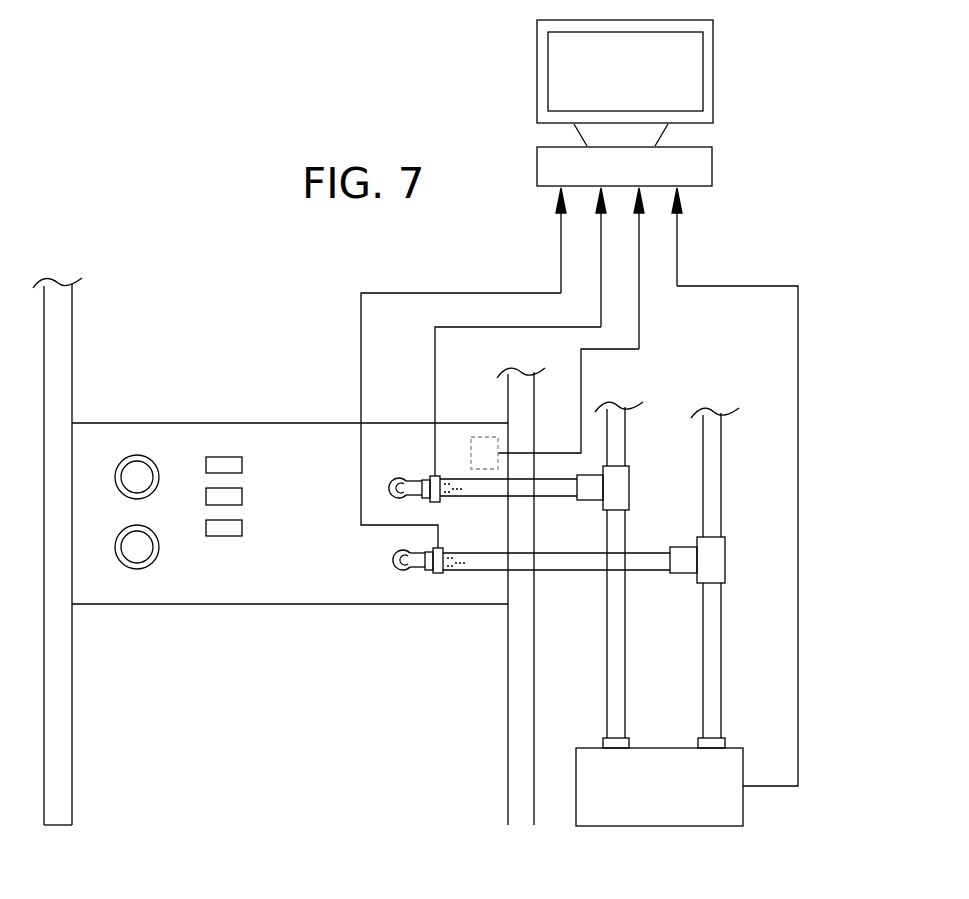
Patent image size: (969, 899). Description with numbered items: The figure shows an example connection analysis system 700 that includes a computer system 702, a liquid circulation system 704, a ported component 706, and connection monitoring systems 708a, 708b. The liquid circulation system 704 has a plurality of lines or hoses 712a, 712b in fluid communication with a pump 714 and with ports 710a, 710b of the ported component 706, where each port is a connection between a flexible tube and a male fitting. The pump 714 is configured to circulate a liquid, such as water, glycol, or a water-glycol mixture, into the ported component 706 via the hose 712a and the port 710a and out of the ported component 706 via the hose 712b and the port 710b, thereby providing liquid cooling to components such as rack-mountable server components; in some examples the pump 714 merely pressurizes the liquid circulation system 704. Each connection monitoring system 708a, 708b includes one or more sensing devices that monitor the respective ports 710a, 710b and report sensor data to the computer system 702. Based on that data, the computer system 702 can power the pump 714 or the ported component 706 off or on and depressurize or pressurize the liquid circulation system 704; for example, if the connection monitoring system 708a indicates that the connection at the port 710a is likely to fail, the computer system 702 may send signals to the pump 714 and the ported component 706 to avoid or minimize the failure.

The connection analysis system 700 is at (458, 140).
The computer system 702 is at (690, 167).
The liquid circulation system 704 is at (768, 500).
The ported component 706 is at (200, 442).
The connection monitoring system 708a is at (392, 448).
The connection monitoring system 708b is at (412, 598).
The port 710a is at (392, 483).
The port 710b is at (395, 558).
The hose 712a is at (713, 655).
The hose 712b is at (618, 670).
The pump 714 is at (680, 796).